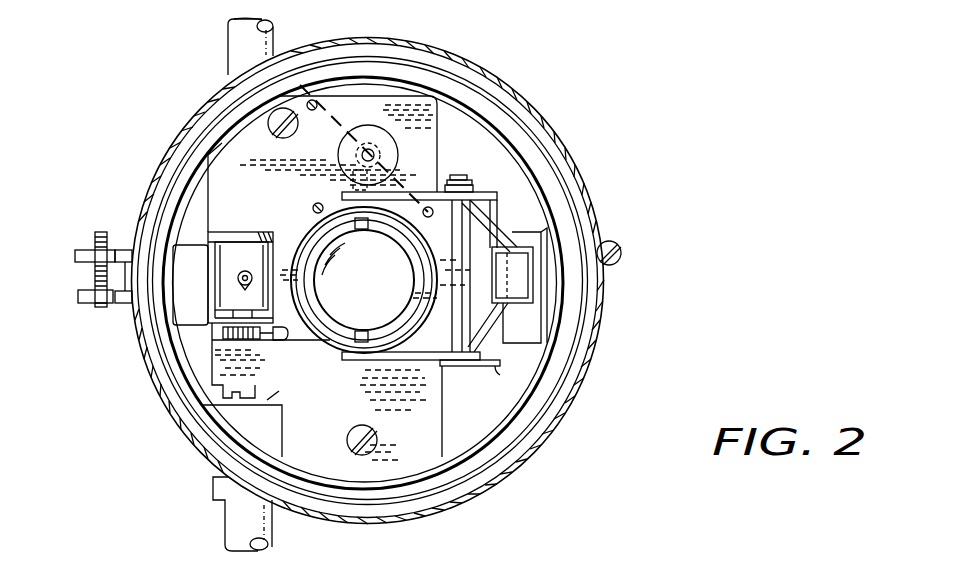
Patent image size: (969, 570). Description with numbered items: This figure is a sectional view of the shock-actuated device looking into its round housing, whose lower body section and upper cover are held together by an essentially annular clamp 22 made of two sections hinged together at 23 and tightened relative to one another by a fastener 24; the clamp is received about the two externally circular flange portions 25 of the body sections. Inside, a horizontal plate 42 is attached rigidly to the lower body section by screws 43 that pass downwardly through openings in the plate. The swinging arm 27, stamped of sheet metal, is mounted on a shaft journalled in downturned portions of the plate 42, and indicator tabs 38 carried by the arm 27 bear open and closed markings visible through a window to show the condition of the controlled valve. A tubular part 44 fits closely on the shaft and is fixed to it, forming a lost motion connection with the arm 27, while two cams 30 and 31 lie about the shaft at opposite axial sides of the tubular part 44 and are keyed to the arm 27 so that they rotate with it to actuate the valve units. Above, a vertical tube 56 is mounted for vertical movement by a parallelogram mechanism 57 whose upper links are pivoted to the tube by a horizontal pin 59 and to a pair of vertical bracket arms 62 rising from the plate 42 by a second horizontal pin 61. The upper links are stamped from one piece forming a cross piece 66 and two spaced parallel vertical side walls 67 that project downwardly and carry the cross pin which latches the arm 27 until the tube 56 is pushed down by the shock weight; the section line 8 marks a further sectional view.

The section line 8- 8 is at (300, 85).
The annular clamp 22 is at (599, 334).
The hinge 23 is at (621, 244).
The fastener 24 is at (100, 232).
The flange portions 25 is at (573, 182).
The arm 27 is at (187, 330).
The cam 30 is at (262, 242).
The cam 31 is at (267, 318).
The indicator tabs 38 is at (172, 304).
The horizontal plate 42 is at (387, 97).
The screws 43 is at (272, 118).
The tubular part 44 is at (233, 253).
The vertical tube 56 is at (416, 332).
The parallelogram mechanism 57 is at (437, 183).
The horizontal pin 59 is at (352, 327).
The horizontal pin 61 is at (462, 242).
The bracket arms 62 is at (475, 188).
The cross piece 66 is at (530, 278).
The side walls 67 is at (548, 229).